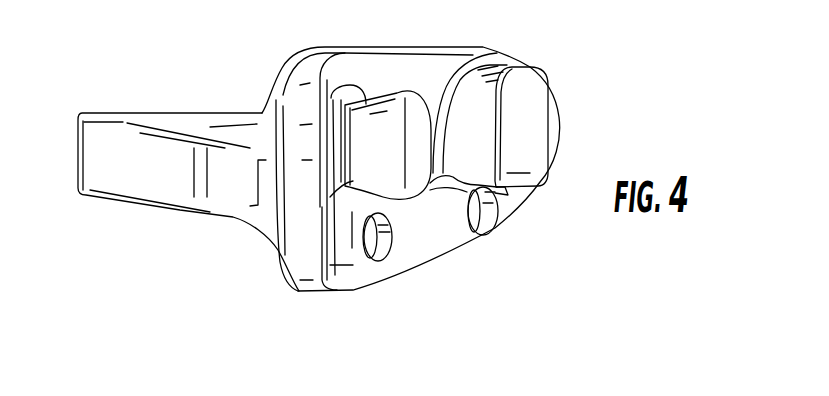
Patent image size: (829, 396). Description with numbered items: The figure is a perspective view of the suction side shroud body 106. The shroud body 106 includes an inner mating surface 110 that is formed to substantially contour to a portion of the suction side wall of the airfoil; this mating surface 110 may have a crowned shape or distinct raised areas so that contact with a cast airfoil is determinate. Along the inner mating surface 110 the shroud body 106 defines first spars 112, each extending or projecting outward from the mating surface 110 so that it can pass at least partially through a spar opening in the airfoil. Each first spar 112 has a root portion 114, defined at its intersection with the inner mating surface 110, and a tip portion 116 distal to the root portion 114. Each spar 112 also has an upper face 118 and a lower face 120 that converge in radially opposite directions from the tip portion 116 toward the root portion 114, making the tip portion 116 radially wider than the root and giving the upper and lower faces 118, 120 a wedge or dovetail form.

The suction side shroud body 106 is at (196, 113).
The inner mating surface 110 is at (299, 291).
The first spar 112 is at (572, 129).
The root portion 114 is at (351, 202).
The tip portion 116 is at (413, 120).
The upper face 118 is at (401, 97).
The lower face 120 is at (387, 214).